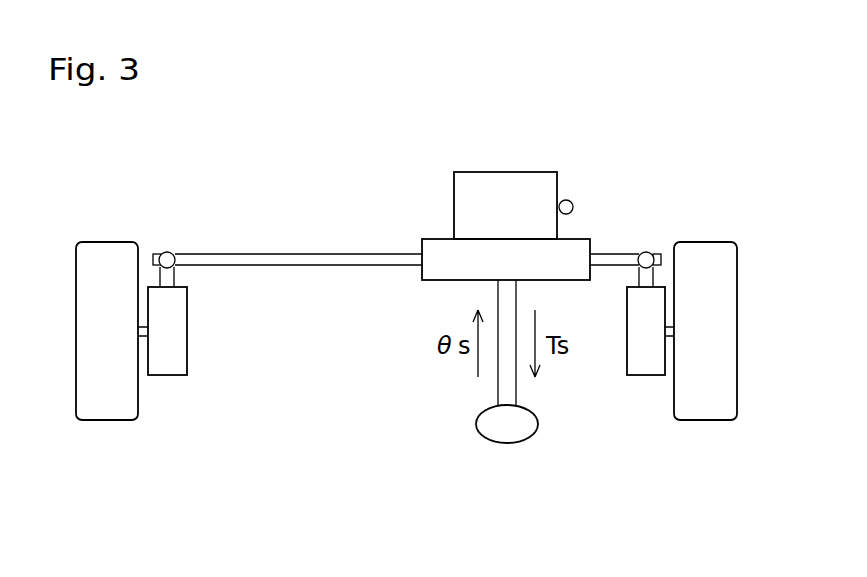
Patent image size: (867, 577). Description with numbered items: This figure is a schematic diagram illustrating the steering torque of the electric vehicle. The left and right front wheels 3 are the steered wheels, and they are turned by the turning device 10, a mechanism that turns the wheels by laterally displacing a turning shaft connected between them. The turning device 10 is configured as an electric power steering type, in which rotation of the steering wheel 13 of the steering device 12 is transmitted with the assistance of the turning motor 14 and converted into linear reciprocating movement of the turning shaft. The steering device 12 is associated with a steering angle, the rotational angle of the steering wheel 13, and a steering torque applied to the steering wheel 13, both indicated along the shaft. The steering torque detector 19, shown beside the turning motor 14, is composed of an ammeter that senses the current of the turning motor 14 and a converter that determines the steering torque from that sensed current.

The front wheel 3 is at (76, 330).
The turning device 10 is at (422, 242).
The steering device 12 is at (512, 443).
The steering wheel 13 is at (490, 443).
The turning motor 14 is at (507, 172).
The steering torque detector 19 is at (574, 206).